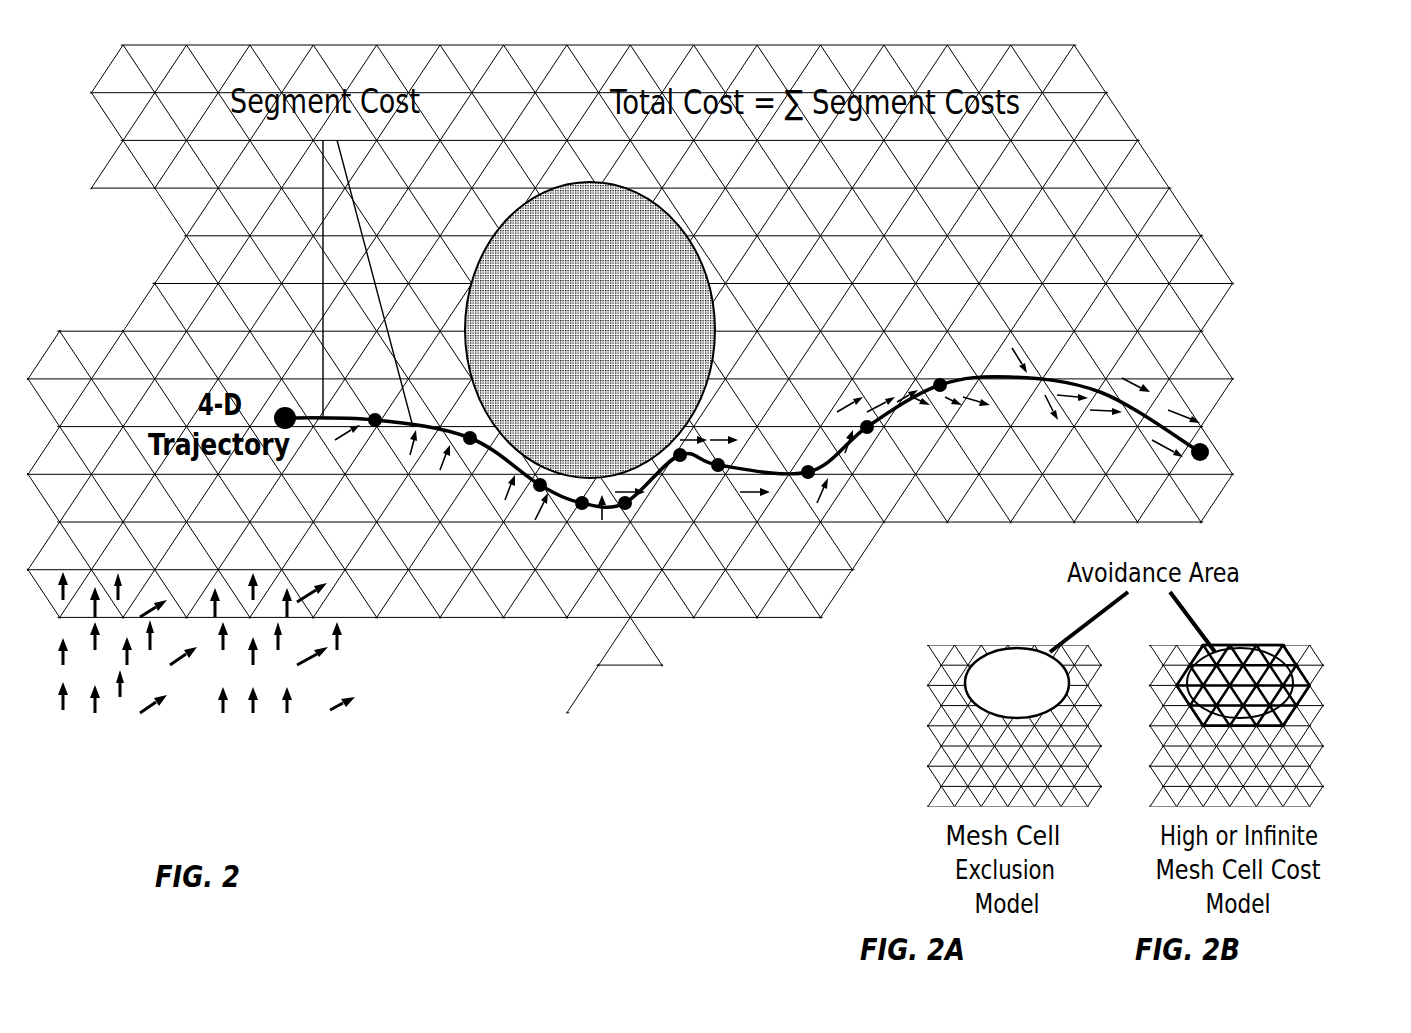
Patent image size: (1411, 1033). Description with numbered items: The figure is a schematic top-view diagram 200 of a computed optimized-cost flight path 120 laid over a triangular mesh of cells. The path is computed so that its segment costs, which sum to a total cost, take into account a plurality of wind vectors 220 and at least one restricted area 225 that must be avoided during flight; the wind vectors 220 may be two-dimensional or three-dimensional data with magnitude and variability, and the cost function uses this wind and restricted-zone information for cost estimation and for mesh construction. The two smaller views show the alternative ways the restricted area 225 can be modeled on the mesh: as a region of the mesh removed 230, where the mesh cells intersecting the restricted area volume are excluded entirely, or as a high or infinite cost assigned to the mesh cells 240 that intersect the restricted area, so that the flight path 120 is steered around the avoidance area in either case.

In FIG. 2, the schematic top-view diagram 200 is at (117, 828).
In FIG. 2, the optimized-cost flight path 120 is at (1093, 393).
In FIG. 2, the wind vectors 220 is at (355, 682).
In FIG. 2, the restricted area 225 is at (693, 258).
In FIG. 2A, the region of the mesh removed 230 is at (980, 718).
In FIG. 2B, the high or infinite cost assigned to mesh cells 240 is at (1298, 681).